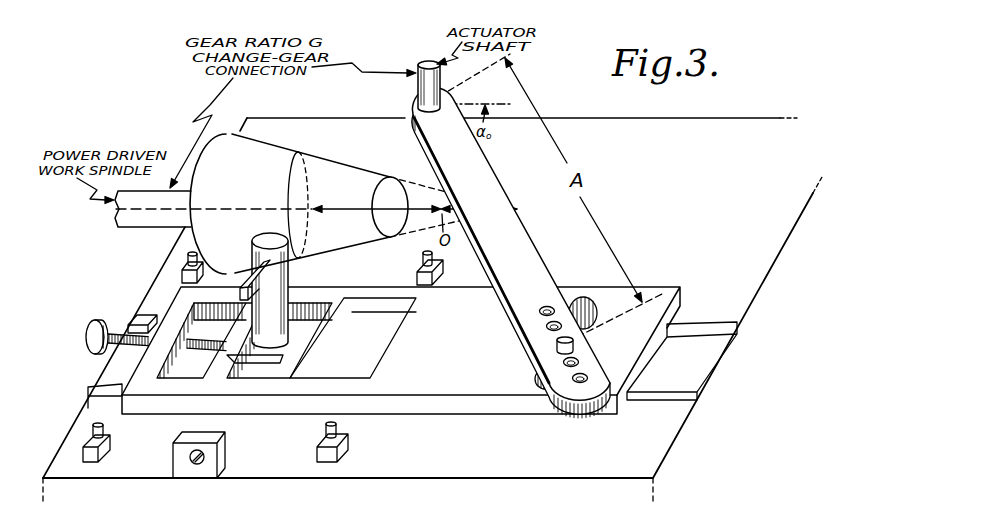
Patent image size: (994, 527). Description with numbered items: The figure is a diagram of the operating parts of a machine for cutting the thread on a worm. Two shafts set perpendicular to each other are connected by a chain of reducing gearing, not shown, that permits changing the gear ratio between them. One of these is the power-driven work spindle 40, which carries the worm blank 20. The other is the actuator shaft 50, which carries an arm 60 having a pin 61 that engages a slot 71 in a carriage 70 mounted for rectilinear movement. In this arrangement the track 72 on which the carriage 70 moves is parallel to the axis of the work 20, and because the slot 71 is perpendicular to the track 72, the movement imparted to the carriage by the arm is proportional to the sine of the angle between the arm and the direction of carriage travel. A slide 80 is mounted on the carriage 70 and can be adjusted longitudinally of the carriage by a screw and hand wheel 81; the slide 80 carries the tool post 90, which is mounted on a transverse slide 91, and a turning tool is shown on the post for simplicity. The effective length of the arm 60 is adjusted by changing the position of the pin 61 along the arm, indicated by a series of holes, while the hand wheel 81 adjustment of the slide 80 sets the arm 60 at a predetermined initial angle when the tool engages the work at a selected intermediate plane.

The worm blank 20 is at (355, 168).
The power-driven work spindle 40 is at (157, 222).
The actuator shaft 50 is at (425, 61).
The arm 60 is at (527, 249).
The pin 61 is at (556, 343).
The carriage 70 is at (448, 405).
The slot 71 is at (587, 298).
The track 72 is at (708, 322).
The slide 80 is at (312, 347).
The screw and hand wheel 81 is at (85, 329).
The tool post 90 is at (292, 281).
The transverse slide 91 is at (270, 358).